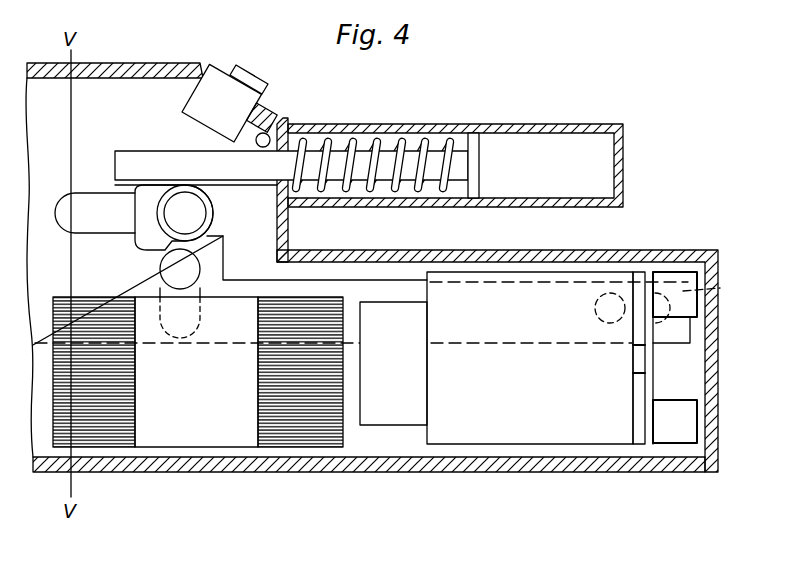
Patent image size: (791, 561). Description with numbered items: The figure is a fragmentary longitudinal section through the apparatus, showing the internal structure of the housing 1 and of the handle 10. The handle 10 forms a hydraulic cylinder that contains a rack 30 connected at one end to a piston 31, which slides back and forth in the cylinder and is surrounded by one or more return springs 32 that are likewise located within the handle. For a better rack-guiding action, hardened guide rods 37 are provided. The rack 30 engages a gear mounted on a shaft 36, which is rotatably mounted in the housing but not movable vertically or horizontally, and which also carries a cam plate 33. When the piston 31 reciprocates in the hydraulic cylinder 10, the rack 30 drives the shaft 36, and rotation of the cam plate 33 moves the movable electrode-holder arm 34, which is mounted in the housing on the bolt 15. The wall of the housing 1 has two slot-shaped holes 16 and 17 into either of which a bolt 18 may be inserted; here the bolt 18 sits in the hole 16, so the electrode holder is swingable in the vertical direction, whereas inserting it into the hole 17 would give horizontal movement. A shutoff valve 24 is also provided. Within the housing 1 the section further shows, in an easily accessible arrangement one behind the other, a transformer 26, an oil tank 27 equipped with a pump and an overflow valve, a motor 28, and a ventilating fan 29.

The housing 1 is at (82, 472).
The handle 10 is at (623, 148).
The bolt 15 is at (598, 308).
The slot-shaped hole 16 is at (192, 268).
The slot-shaped hole 17 is at (113, 190).
The bolt 18 is at (200, 282).
The shutoff valve 24 is at (236, 78).
The transformer 26 is at (263, 438).
The oil tank 27 is at (388, 420).
The motor 28 is at (530, 432).
The ventilating fan 29 is at (670, 437).
The rack 30 is at (172, 163).
The piston 31 is at (483, 141).
The return spring 32 is at (403, 133).
The cam plate 33 is at (290, 210).
The electrode-holder arm 34 is at (497, 361).
The shaft 36 is at (197, 210).
The guide rod 37 is at (265, 135).